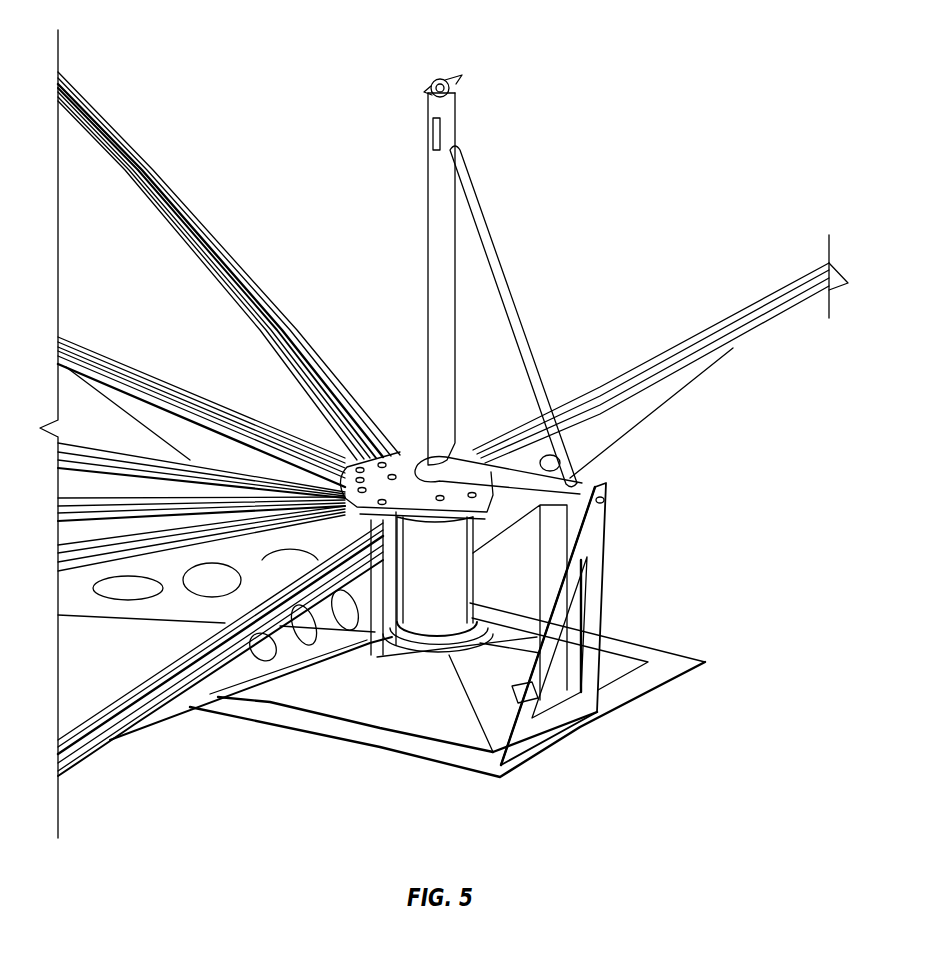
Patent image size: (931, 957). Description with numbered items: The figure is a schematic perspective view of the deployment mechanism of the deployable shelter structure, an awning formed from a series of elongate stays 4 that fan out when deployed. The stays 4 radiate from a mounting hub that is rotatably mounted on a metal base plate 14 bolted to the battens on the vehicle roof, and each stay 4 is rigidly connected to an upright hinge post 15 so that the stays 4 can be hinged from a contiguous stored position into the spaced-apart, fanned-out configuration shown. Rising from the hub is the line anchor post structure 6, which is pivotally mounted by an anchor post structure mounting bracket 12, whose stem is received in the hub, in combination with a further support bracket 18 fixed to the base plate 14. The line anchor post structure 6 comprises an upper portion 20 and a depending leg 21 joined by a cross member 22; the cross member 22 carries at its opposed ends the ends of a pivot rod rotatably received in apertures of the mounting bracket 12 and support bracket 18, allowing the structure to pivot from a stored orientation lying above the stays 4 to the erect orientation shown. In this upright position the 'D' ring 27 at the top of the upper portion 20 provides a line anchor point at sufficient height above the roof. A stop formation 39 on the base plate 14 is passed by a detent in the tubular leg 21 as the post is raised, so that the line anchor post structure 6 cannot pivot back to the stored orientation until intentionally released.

The elongate stays 4 is at (208, 233).
The line anchor post structure 6 is at (540, 313).
The anchor post structure mounting bracket 12 is at (408, 453).
The base plate 14 is at (638, 656).
The hinge post 15 is at (378, 630).
The support bracket 18 is at (605, 566).
The upper portion 20 is at (437, 242).
The depending leg 21 is at (552, 566).
The cross member 22 is at (465, 462).
The 'D' ring 27 is at (440, 78).
The stop formation 39 is at (512, 686).